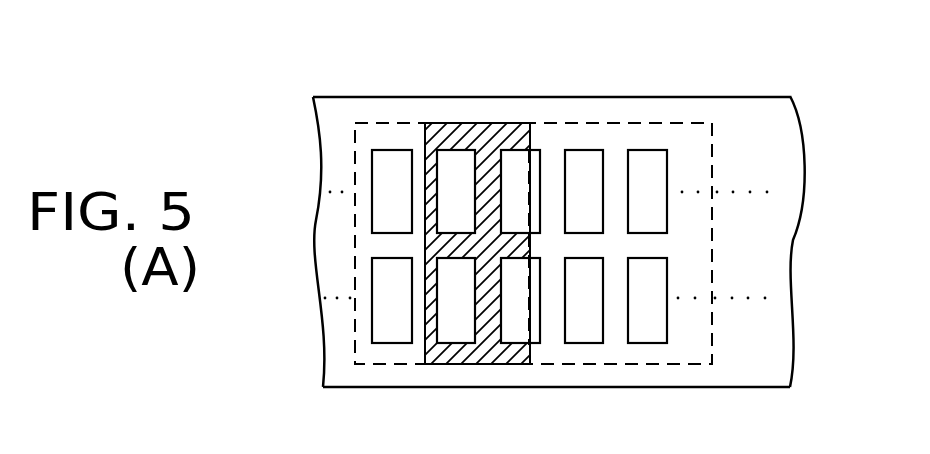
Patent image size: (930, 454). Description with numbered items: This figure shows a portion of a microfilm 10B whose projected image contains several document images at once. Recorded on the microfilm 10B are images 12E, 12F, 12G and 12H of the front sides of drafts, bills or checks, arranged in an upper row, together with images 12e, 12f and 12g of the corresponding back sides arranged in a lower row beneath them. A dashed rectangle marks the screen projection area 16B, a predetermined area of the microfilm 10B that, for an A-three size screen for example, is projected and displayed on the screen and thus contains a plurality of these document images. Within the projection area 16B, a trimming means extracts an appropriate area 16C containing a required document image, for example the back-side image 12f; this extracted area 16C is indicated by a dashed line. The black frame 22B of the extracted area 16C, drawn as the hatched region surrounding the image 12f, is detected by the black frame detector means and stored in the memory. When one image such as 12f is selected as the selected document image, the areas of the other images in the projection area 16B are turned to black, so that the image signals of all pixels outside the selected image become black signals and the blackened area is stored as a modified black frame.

The microfilm 10B is at (750, 387).
The image 12E is at (395, 162).
The image 12F is at (452, 162).
The image 12G is at (520, 162).
The pixel electrode 12H is at (582, 162).
The image 12e is at (395, 327).
The image 12f is at (460, 327).
The image 12g is at (533, 345).
The screen projection area 16B is at (686, 127).
The extracted area 16C is at (529, 150).
The black frame 22B is at (480, 128).